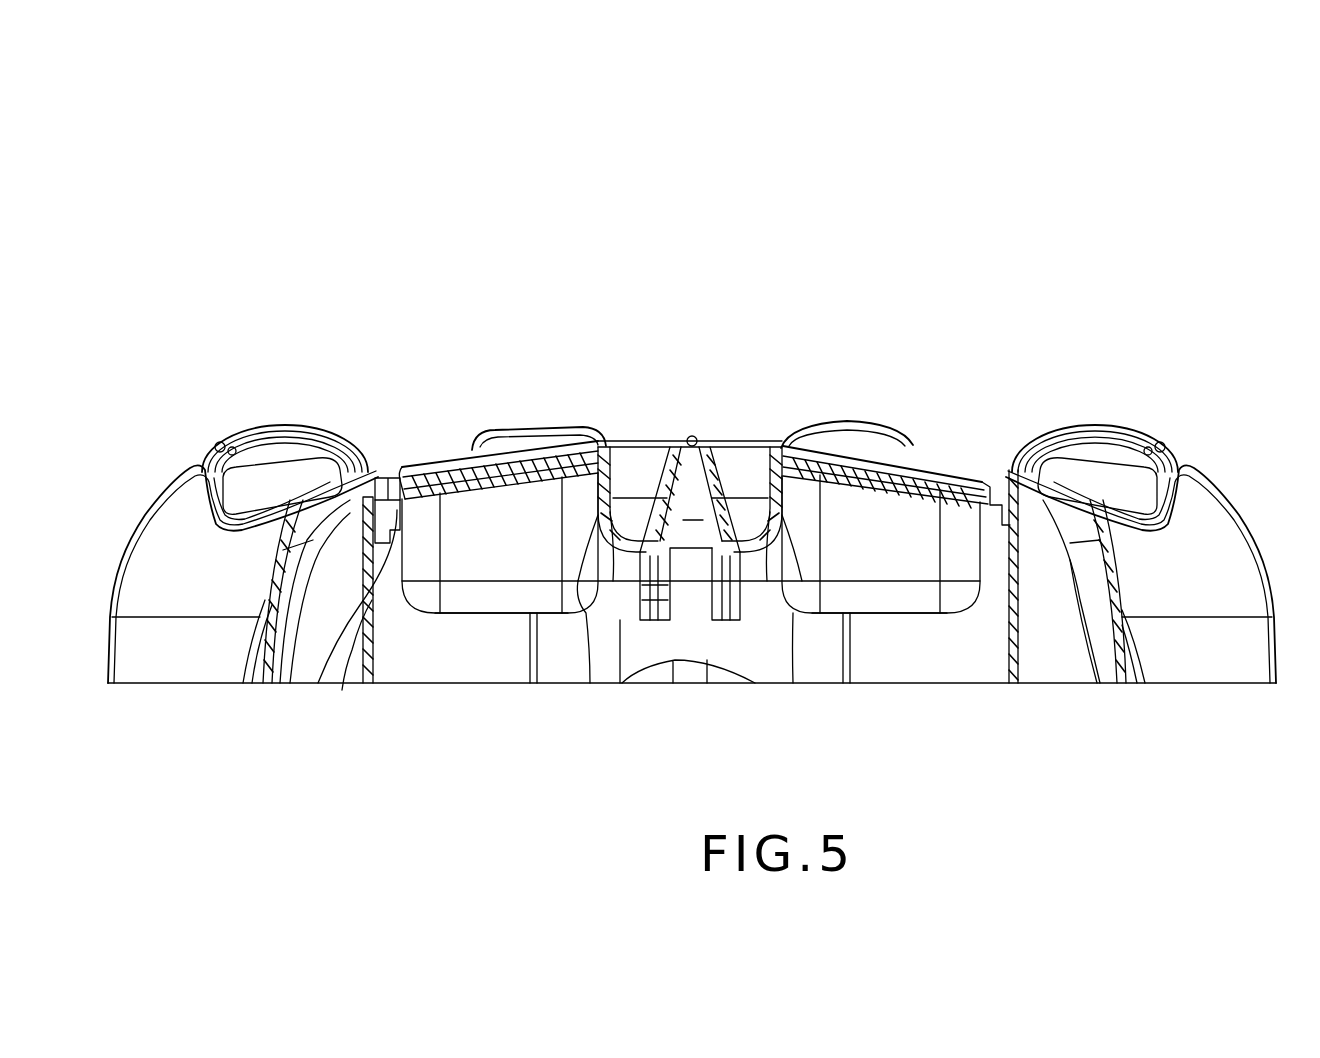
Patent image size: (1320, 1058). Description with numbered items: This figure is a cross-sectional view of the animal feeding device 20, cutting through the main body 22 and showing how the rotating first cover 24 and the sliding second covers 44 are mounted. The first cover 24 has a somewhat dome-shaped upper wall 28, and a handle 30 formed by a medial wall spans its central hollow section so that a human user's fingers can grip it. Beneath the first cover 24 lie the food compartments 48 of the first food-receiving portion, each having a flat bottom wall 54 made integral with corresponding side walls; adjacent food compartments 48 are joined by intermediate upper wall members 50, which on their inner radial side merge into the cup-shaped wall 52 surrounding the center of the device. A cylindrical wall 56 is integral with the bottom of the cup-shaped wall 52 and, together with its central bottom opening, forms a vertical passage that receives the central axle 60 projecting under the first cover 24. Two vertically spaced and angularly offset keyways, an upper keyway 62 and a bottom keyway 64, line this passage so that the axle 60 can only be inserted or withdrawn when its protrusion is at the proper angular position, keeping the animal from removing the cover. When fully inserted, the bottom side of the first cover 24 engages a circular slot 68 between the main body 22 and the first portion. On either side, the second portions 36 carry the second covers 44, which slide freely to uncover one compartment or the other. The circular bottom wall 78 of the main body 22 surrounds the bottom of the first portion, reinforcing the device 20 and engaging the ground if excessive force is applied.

The device 20 is at (1162, 164).
The main body 22 is at (1188, 670).
The first cover 24 is at (960, 443).
The dome-shaped upper wall 28 is at (452, 458).
The handle 30 is at (692, 437).
The second portions 36 is at (151, 468).
The second cover 44 is at (305, 432).
The food compartments 48 is at (495, 602).
The intermediate upper wall members 50 is at (487, 487).
The cup-shaped wall 52 is at (590, 683).
The flat bottom wall 54 is at (460, 628).
The cylindrical wall 56 is at (760, 620).
The central axle 60 is at (740, 620).
The upper keyway 62 is at (620, 683).
The bottom keyway 64 is at (648, 620).
The circular slot 68 is at (318, 683).
The circular bottom wall 78 is at (342, 690).